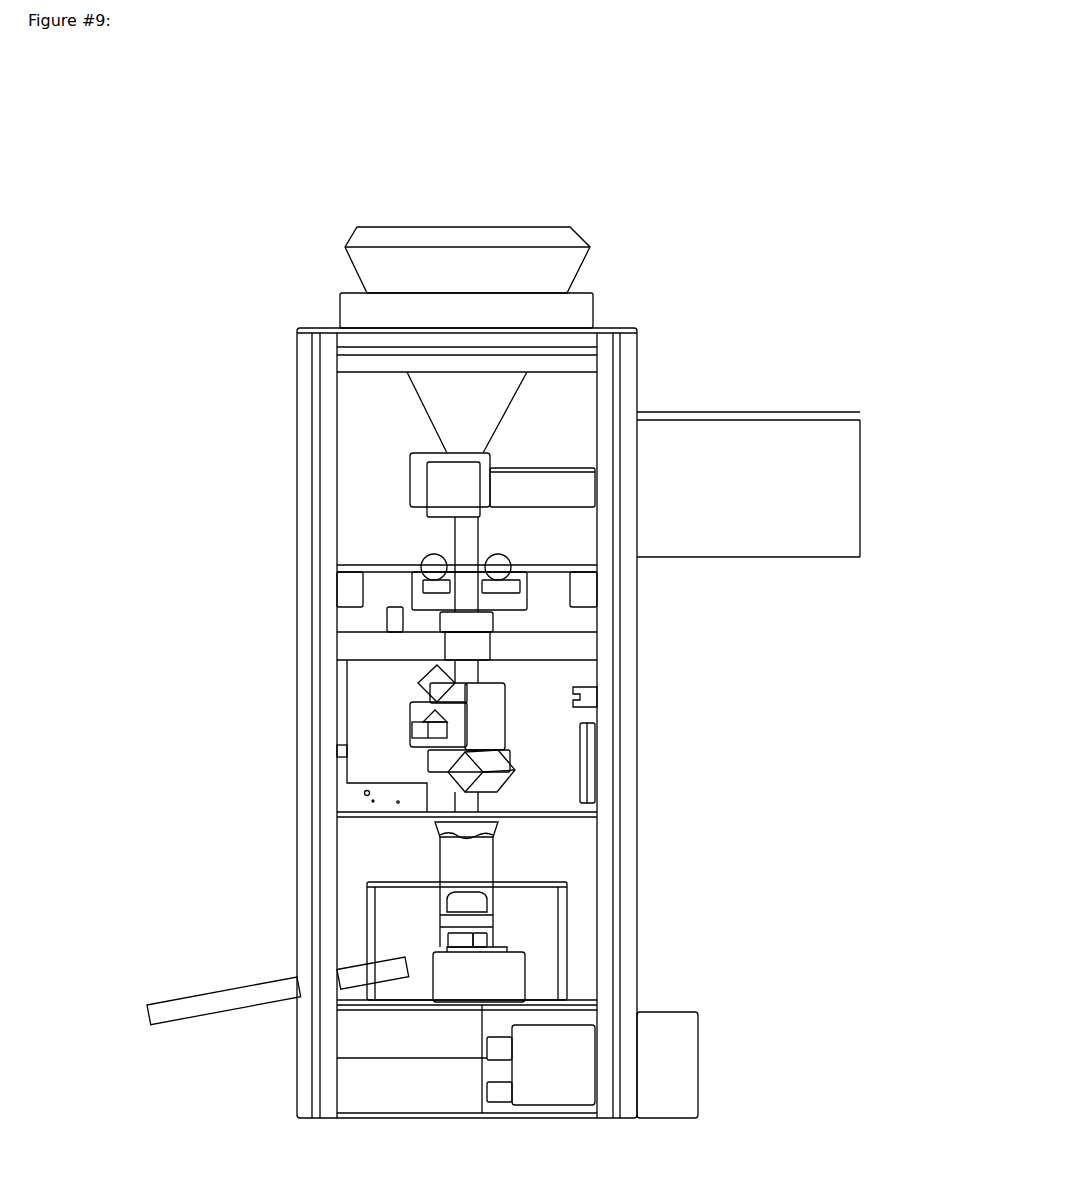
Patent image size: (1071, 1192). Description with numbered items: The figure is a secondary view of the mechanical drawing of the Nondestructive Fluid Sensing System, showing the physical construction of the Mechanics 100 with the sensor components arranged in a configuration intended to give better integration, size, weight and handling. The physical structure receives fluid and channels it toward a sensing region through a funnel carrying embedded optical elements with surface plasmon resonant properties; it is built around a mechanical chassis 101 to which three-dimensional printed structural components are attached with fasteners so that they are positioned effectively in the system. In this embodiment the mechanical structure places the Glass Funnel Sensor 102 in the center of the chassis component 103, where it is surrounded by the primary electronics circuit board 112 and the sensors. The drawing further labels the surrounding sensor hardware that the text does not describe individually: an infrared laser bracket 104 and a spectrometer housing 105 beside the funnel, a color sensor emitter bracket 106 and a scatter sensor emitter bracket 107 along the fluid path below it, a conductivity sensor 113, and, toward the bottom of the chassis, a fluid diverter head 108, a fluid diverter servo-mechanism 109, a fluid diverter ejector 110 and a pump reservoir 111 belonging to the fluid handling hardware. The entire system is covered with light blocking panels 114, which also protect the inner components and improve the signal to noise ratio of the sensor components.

The mechanics 100 is at (490, 615).
The mechanical chassis 101 is at (570, 232).
The glass funnel sensor 102 is at (390, 272).
The chassis component 103 is at (298, 478).
The infrared laser bracket 104 is at (527, 486).
The spectrometer housing 105 is at (752, 502).
The color sensor emitter bracket 106 is at (548, 651).
The scatter sensor emitter bracket 107 is at (440, 757).
The fluid diverter head 108 is at (487, 862).
The fluid diverter servo-mechanism 109 is at (505, 985).
The fluid diverter ejector 110 is at (250, 992).
The pump reservoir 111 is at (373, 1087).
The primary electronics circuit board 112 is at (358, 800).
The conductivity sensor 113 is at (423, 577).
The light blocking panels 114 is at (570, 1068).